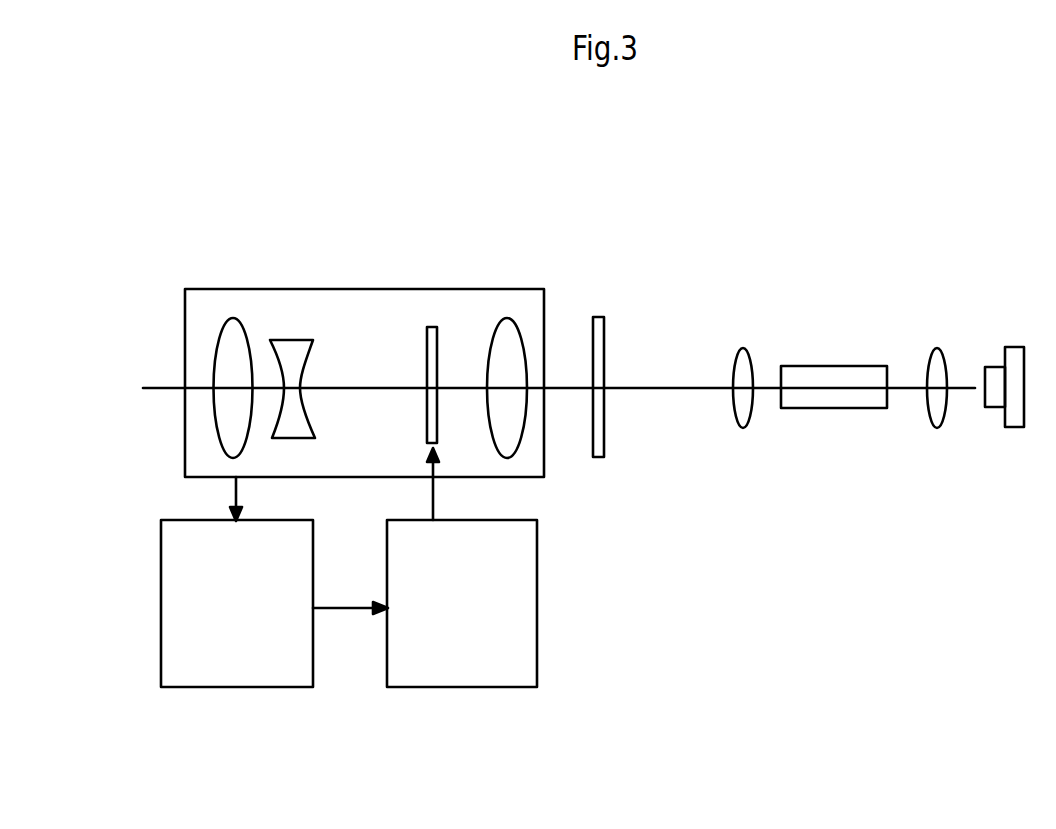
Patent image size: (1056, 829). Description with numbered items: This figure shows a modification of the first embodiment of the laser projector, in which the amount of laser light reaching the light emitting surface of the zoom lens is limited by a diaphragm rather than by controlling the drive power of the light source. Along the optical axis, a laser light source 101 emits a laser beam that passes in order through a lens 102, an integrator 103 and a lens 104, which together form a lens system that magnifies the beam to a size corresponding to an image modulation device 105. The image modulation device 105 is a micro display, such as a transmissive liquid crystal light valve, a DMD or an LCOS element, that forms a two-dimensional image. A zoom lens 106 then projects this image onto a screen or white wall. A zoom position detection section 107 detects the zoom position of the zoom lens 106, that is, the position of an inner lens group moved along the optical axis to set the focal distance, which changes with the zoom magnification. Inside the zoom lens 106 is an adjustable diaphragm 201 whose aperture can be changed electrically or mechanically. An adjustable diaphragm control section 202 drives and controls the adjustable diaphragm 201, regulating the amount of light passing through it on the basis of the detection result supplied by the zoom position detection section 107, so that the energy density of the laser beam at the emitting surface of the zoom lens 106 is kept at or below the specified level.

The laser light source 101 is at (1013, 350).
The lens 102 is at (938, 350).
The integrator 103 is at (830, 373).
The lens 104 is at (743, 350).
The image modulation device 105 is at (598, 315).
The zoom lens 106 is at (227, 303).
The zoom position detection section 107 is at (210, 688).
The adjustable diaphragm 201 is at (433, 322).
The adjustable diaphragm control section 202 is at (458, 688).